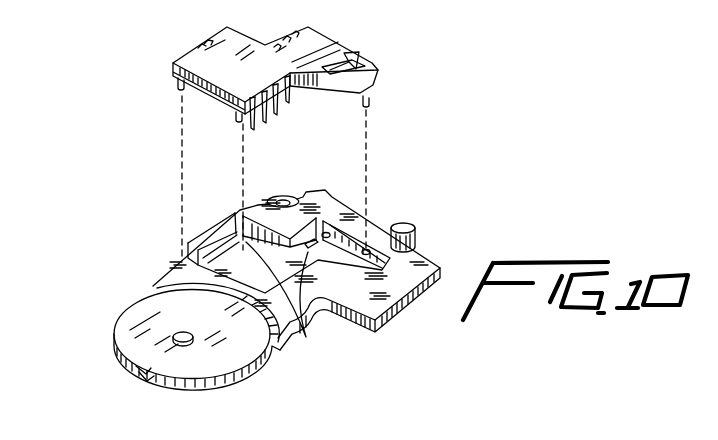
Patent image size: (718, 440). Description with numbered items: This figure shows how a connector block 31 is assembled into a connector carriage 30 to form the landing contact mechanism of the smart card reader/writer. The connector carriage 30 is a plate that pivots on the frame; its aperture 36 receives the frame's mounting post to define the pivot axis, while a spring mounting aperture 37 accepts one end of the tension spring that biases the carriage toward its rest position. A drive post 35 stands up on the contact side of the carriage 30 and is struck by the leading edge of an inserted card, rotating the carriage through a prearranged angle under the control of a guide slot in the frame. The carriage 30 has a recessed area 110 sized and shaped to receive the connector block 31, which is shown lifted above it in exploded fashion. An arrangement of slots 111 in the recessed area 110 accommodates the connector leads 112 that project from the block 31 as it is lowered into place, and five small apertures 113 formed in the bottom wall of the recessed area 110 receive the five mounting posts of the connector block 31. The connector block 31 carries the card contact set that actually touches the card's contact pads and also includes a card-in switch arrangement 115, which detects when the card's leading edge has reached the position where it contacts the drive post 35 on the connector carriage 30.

The connector carriage 30 is at (341, 208).
The connector block 31 is at (226, 80).
The post 35 is at (413, 229).
The aperture 36 is at (180, 333).
The spring mounting aperture 37 is at (283, 200).
The recessed area 110 is at (241, 235).
The slots 111 is at (203, 257).
The connector leads 112 is at (187, 55).
The small apertures 113 is at (368, 250).
The card-in switch arrangement 115 is at (366, 64).